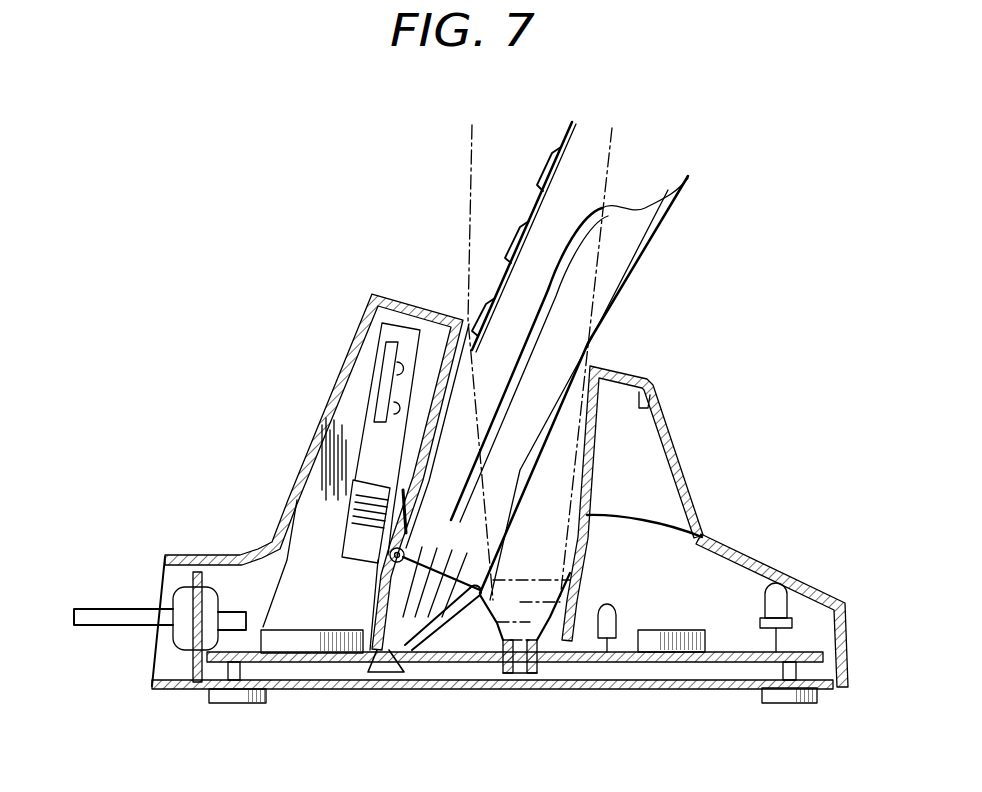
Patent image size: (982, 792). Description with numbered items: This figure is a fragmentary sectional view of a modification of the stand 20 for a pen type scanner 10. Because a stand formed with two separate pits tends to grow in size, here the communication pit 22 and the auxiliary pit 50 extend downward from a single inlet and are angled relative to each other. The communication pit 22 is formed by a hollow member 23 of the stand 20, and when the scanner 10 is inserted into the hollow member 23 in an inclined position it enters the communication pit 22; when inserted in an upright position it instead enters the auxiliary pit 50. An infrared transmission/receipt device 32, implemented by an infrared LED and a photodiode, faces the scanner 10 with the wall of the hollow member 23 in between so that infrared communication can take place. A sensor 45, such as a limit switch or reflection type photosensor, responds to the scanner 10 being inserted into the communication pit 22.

The pen type scanner 10 is at (528, 201).
The stand 20 is at (680, 423).
The communication pit 22 is at (432, 500).
The hollow member 23 is at (591, 448).
The infrared transmission/receipt device 32 is at (385, 385).
The sensor 45 is at (360, 533).
The auxiliary pit 50 is at (527, 607).